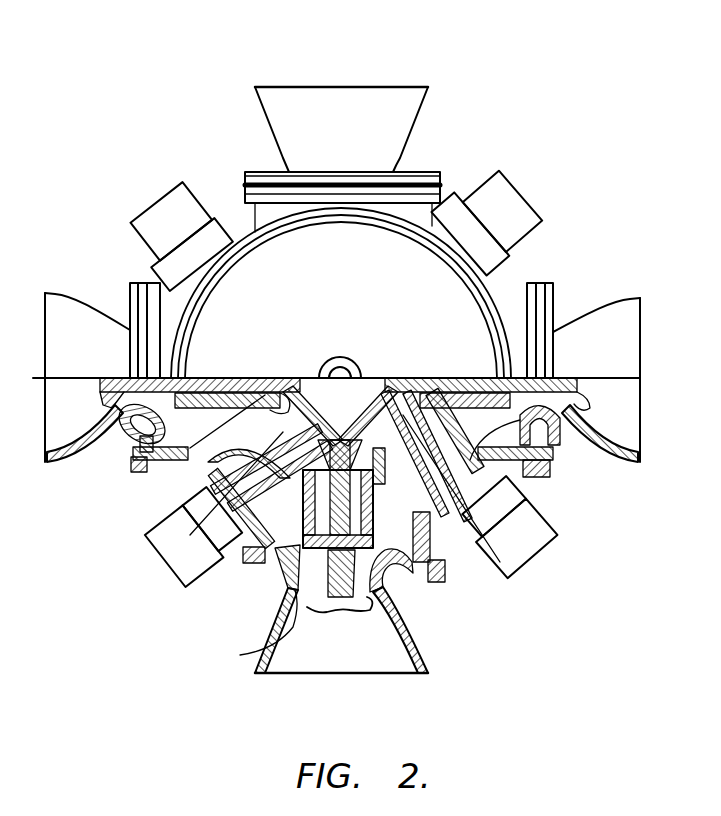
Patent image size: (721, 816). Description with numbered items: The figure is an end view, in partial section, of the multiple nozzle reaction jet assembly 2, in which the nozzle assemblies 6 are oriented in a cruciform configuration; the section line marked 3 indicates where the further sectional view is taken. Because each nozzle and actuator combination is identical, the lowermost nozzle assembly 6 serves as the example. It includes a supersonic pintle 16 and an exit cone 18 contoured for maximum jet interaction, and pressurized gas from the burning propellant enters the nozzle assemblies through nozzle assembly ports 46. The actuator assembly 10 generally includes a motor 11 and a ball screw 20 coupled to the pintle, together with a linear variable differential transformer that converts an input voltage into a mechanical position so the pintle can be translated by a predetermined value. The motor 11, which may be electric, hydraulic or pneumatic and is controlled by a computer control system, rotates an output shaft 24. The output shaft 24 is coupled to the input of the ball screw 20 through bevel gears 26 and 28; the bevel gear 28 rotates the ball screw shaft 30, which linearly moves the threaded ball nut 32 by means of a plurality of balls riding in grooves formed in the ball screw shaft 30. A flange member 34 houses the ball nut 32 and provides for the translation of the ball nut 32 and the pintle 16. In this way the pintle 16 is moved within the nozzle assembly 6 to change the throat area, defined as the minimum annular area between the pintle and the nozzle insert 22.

The multiple nozzle reaction jet assembly 2 is at (618, 64).
The section line for FIG. 3 is at (338, 68).
The nozzle assembly 6 is at (413, 110).
The actuator assembly 10 is at (142, 204).
The motor 11 is at (167, 540).
The supersonic pintle 16 is at (355, 613).
The exit cone 18 is at (412, 614).
The ball screw 20 is at (278, 392).
The nozzle insert 22 is at (265, 647).
The output shaft 24 is at (210, 463).
The bevel gear 26 is at (327, 366).
The bevel gear 28 is at (362, 380).
The ball screw shaft 30 is at (380, 473).
The ball nut 32 is at (250, 585).
The flange member 34 is at (440, 571).
The nozzle assembly port 46 is at (363, 487).